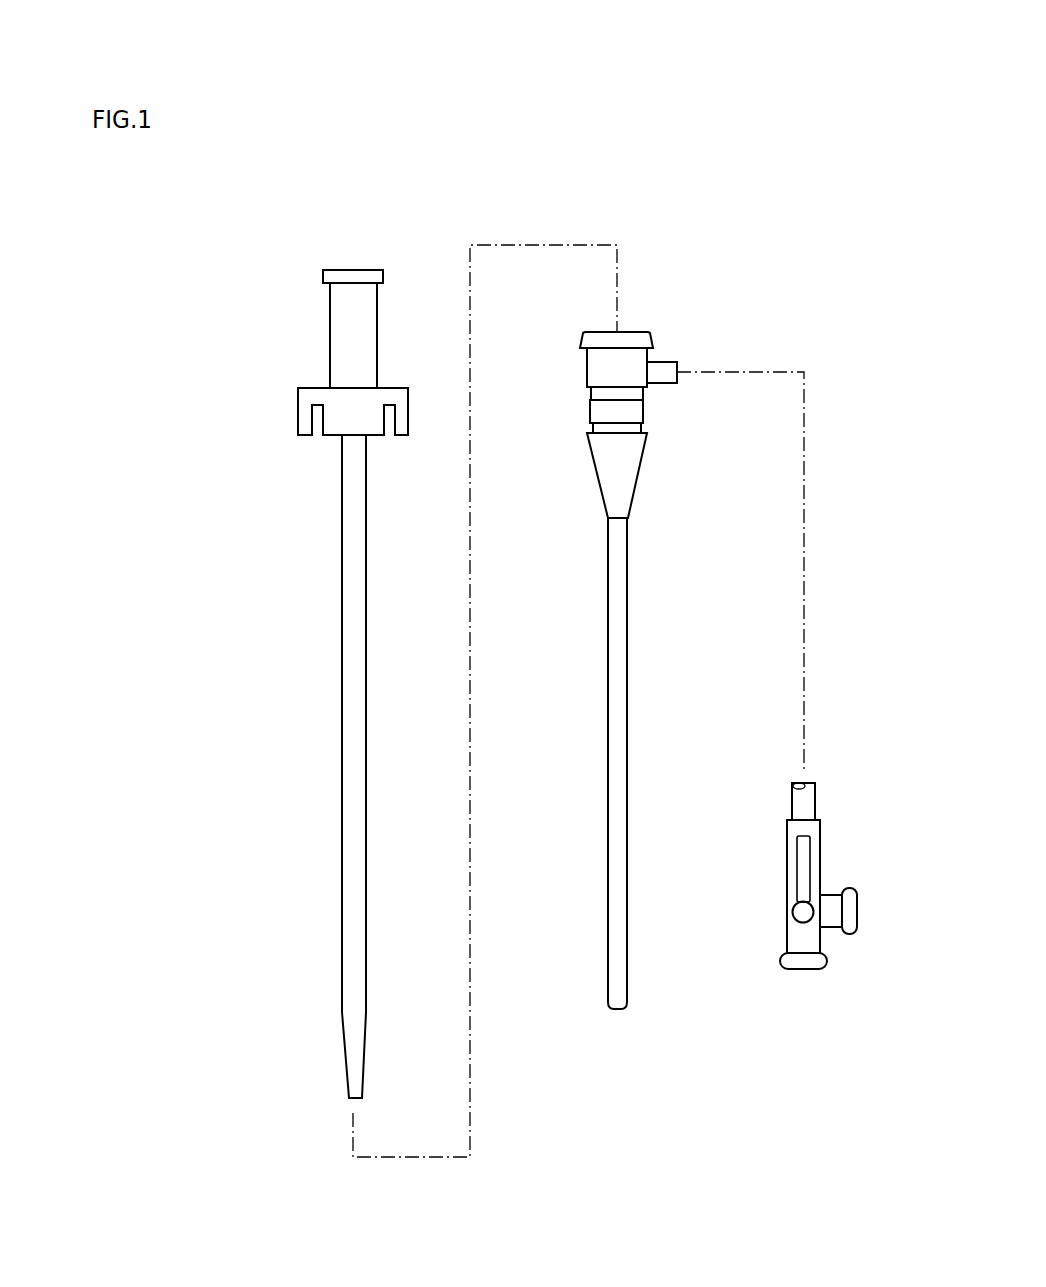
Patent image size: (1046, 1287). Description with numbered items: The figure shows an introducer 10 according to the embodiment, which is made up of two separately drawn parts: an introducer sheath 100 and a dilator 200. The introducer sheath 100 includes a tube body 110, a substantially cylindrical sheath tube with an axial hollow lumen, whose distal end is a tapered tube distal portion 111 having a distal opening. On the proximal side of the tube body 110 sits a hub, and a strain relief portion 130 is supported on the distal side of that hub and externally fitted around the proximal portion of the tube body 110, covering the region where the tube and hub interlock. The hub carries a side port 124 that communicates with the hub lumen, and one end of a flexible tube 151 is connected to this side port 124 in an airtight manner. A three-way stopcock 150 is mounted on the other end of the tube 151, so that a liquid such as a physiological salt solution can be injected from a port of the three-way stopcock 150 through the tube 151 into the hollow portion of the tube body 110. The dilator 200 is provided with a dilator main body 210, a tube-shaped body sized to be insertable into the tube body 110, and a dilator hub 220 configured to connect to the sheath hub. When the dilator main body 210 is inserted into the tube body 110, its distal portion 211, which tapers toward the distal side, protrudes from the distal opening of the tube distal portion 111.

The introducer 10 is at (208, 189).
The introducer sheath 100 is at (660, 333).
The tube body 110 is at (622, 810).
The tube distal portion 111 is at (622, 998).
The side port 124 is at (663, 375).
The strain relief portion 130 is at (620, 440).
The three-way stopcock 150 is at (815, 942).
The flexible tube 151 is at (812, 803).
The dilator 200 is at (296, 352).
The dilator main body 210 is at (345, 690).
The distal portion of the dilator main body 211 is at (352, 1065).
The dilator hub 220 is at (305, 415).